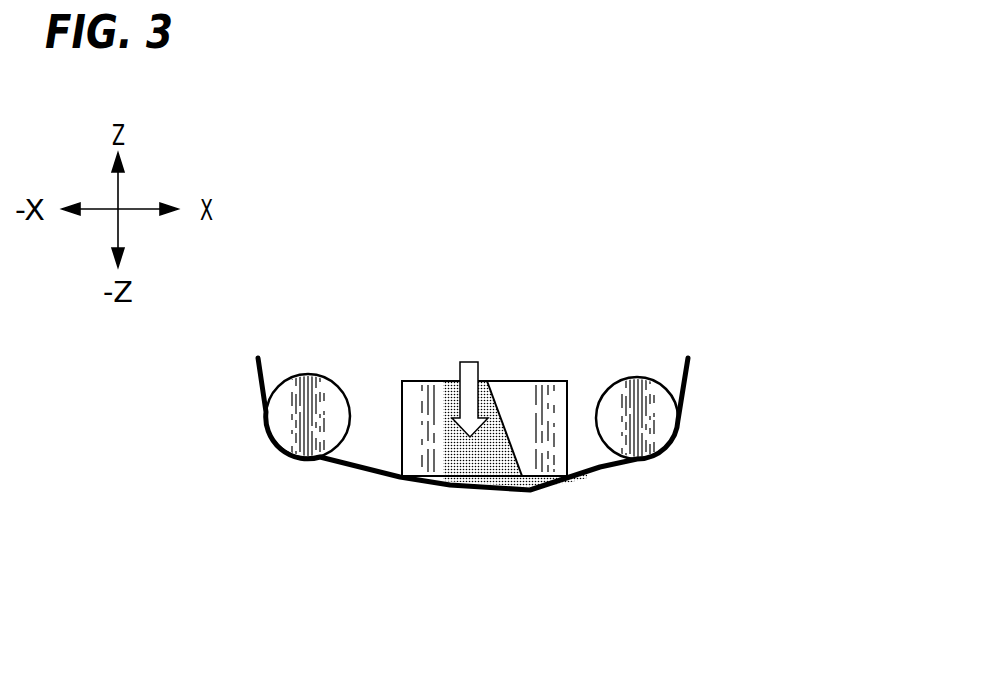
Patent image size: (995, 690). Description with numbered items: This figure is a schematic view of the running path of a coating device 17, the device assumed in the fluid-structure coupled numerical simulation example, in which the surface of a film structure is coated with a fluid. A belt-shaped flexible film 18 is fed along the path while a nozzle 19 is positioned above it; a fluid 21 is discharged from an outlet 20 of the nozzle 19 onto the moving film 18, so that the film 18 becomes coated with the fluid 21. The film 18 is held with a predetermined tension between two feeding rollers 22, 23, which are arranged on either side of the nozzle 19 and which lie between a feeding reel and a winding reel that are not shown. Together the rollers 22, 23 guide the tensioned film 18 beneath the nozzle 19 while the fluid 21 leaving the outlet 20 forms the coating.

The coating device 17 is at (583, 329).
The flexible film 18 is at (342, 468).
The nozzle 19 is at (484, 427).
The outlet 20 is at (492, 487).
The fluid 21 is at (548, 490).
The feeding roller 22 is at (283, 427).
The feeding roller 23 is at (657, 423).